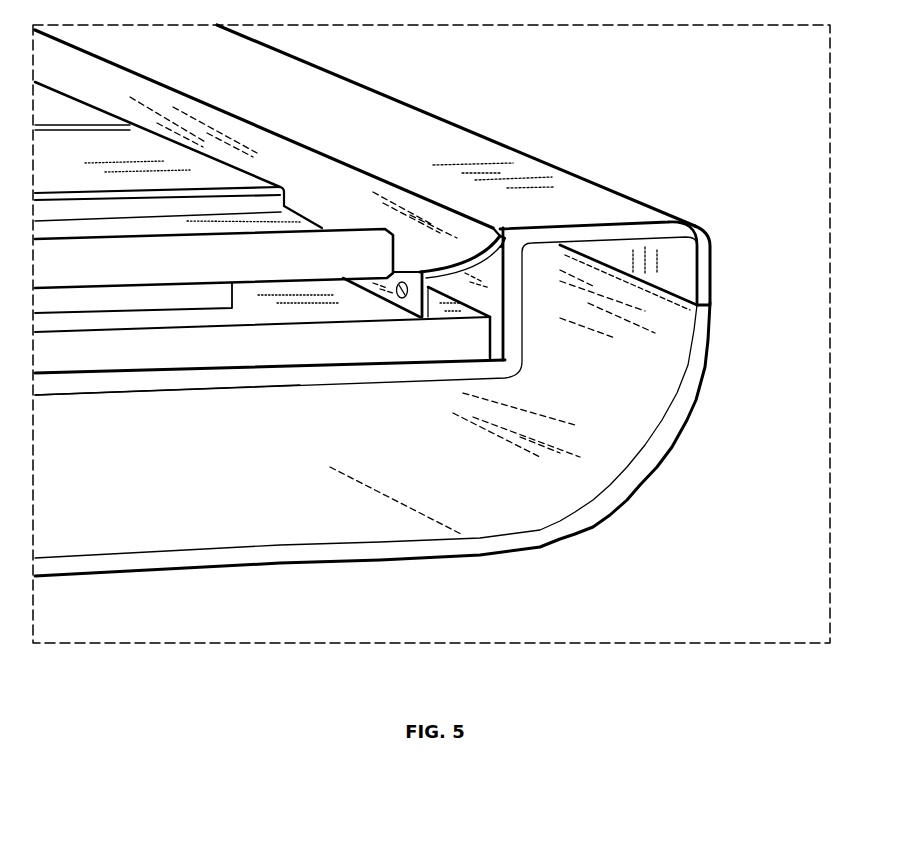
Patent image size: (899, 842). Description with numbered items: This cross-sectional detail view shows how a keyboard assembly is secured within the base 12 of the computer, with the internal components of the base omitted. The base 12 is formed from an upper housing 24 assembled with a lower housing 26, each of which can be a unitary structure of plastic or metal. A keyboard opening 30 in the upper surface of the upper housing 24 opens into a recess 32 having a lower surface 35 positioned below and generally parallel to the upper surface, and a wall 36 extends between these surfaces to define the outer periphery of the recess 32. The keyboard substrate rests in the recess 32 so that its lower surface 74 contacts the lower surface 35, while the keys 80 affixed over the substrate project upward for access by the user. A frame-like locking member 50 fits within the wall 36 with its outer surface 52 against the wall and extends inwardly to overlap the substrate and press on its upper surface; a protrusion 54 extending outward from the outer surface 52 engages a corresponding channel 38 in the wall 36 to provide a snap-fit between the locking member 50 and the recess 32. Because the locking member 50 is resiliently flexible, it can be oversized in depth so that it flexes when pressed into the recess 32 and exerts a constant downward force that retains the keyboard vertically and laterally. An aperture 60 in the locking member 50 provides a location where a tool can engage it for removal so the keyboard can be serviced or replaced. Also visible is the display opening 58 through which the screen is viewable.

The base 12 is at (407, 339).
The upper housing 24 is at (703, 227).
The lower housing 26 is at (693, 368).
The keyboard opening 30 is at (342, 165).
The recess 32 is at (324, 203).
The lower surface 35 is at (252, 378).
The wall 36 is at (508, 343).
The channel 38 is at (503, 225).
The locking member 50 is at (365, 131).
The outer surface 52 is at (527, 229).
The protrusion 54 is at (491, 242).
The display opening 58 is at (420, 318).
The aperture 60 is at (402, 291).
The lower surface 74 is at (185, 374).
The keys 80 is at (82, 155).